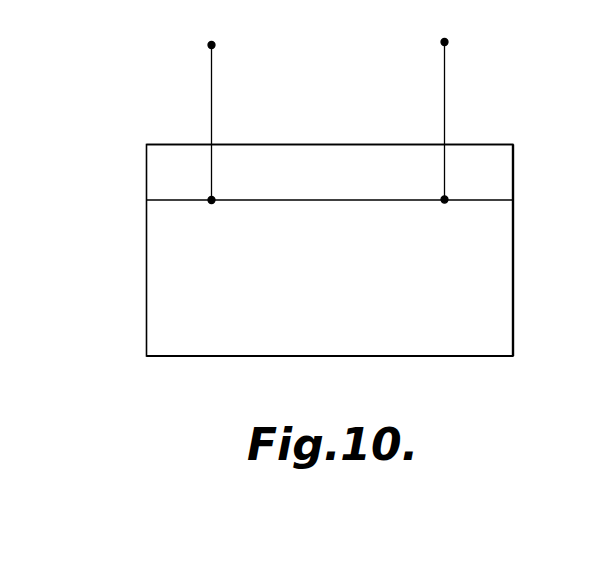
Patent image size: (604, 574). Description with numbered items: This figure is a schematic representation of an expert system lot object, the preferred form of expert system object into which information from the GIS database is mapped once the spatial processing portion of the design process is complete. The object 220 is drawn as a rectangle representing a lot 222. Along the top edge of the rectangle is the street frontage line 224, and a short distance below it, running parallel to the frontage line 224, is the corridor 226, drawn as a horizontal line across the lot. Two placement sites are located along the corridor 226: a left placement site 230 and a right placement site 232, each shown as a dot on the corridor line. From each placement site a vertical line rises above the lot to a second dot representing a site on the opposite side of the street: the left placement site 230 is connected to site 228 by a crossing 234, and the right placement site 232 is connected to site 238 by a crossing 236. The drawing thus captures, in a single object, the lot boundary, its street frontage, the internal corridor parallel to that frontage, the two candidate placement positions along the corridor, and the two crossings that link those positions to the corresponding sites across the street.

The object 220 is at (121, 253).
The lot 222 is at (523, 250).
The street frontage line 224 is at (327, 143).
The corridor 226 is at (330, 203).
The site 228 is at (209, 45).
The left placement site 230 is at (212, 204).
The right placement site 232 is at (445, 204).
The crossing 234 is at (211, 91).
The crossing 236 is at (447, 88).
The site 238 is at (448, 42).